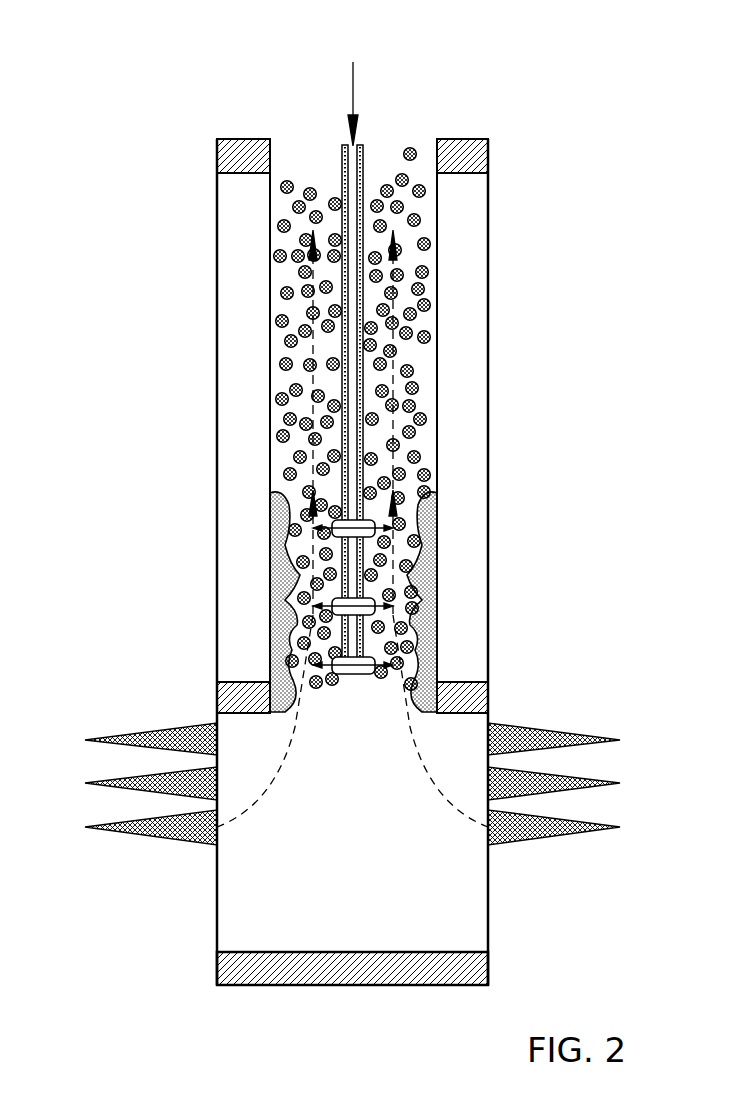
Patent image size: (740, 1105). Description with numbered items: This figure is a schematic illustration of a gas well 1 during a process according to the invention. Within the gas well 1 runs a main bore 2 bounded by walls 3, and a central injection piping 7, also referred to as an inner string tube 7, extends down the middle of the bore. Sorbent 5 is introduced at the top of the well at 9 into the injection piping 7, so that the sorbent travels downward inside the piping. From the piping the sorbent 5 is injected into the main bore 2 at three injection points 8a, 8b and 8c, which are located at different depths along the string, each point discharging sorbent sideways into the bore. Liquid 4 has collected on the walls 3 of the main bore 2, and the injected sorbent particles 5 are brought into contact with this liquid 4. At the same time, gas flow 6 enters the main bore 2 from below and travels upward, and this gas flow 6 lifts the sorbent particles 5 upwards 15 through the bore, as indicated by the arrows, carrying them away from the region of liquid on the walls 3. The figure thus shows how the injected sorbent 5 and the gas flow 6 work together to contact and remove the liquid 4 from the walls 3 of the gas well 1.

The gas well 1 is at (264, 78).
The main bore 2 is at (423, 212).
The walls 3 is at (243, 339).
The liquid 4 is at (277, 511).
The sorbent 5 is at (410, 148).
The gas flow 6 is at (252, 813).
The injection piping 7 is at (353, 213).
The injection point 8a is at (372, 538).
The injection point 8b is at (372, 615).
The injection point 8c is at (372, 673).
The sorbent introduction point 9 is at (353, 93).
The upward lifting 15 is at (393, 297).